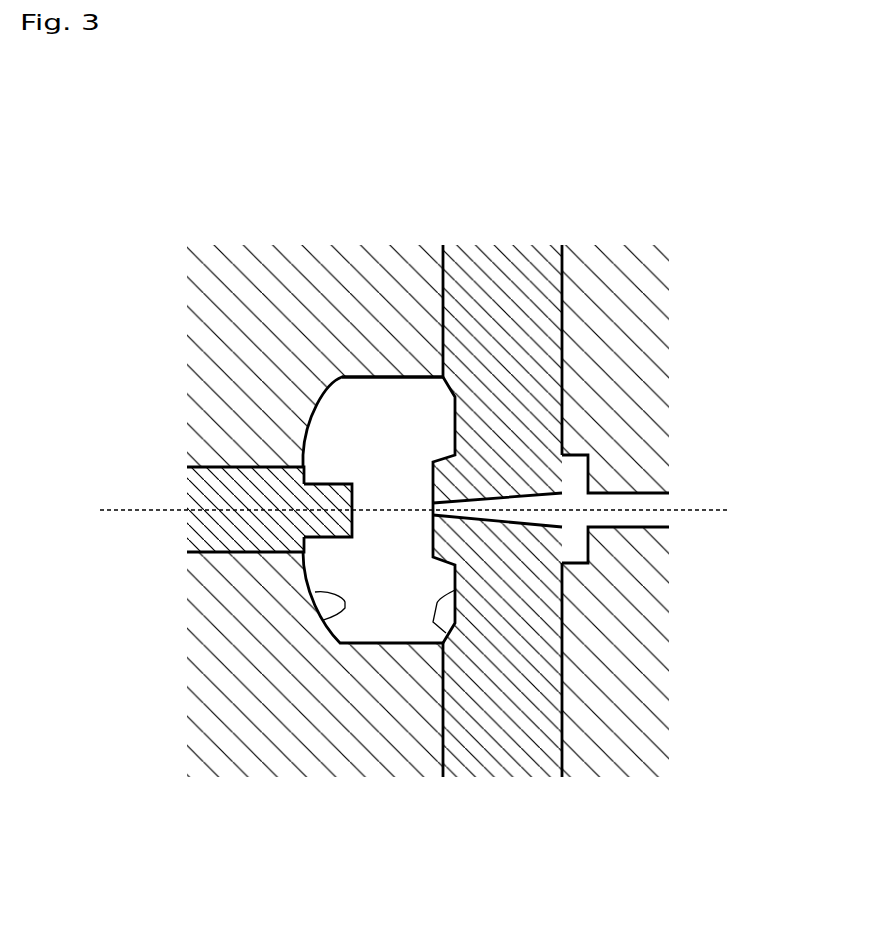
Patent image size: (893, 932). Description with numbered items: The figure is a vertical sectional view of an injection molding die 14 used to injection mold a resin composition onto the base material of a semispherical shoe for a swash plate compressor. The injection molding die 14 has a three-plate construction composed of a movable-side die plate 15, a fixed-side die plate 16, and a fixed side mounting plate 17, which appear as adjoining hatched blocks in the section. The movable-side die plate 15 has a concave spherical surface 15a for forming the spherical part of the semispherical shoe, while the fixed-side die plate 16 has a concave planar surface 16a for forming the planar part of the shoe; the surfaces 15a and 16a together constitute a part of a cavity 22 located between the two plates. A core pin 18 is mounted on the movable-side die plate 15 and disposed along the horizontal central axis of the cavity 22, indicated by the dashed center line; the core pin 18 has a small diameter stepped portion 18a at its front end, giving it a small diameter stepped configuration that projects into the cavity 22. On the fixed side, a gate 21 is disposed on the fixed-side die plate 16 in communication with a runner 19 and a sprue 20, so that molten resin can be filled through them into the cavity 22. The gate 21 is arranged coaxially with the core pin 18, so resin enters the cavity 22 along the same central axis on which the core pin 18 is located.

The injection molding die 14 is at (253, 217).
The movable-side die plate 15 is at (217, 322).
The concave spherical surface 15a is at (350, 612).
The fixed-side die plate 16 is at (495, 267).
The concave planar surface 16a is at (445, 638).
The fixed side mounting plate 17 is at (623, 277).
The core pin 18 is at (207, 507).
The small diameter stepped portion 18a is at (329, 520).
The runner 19 is at (572, 518).
The sprue 20 is at (507, 510).
The gate 21 is at (443, 508).
The cavity 22 is at (388, 403).